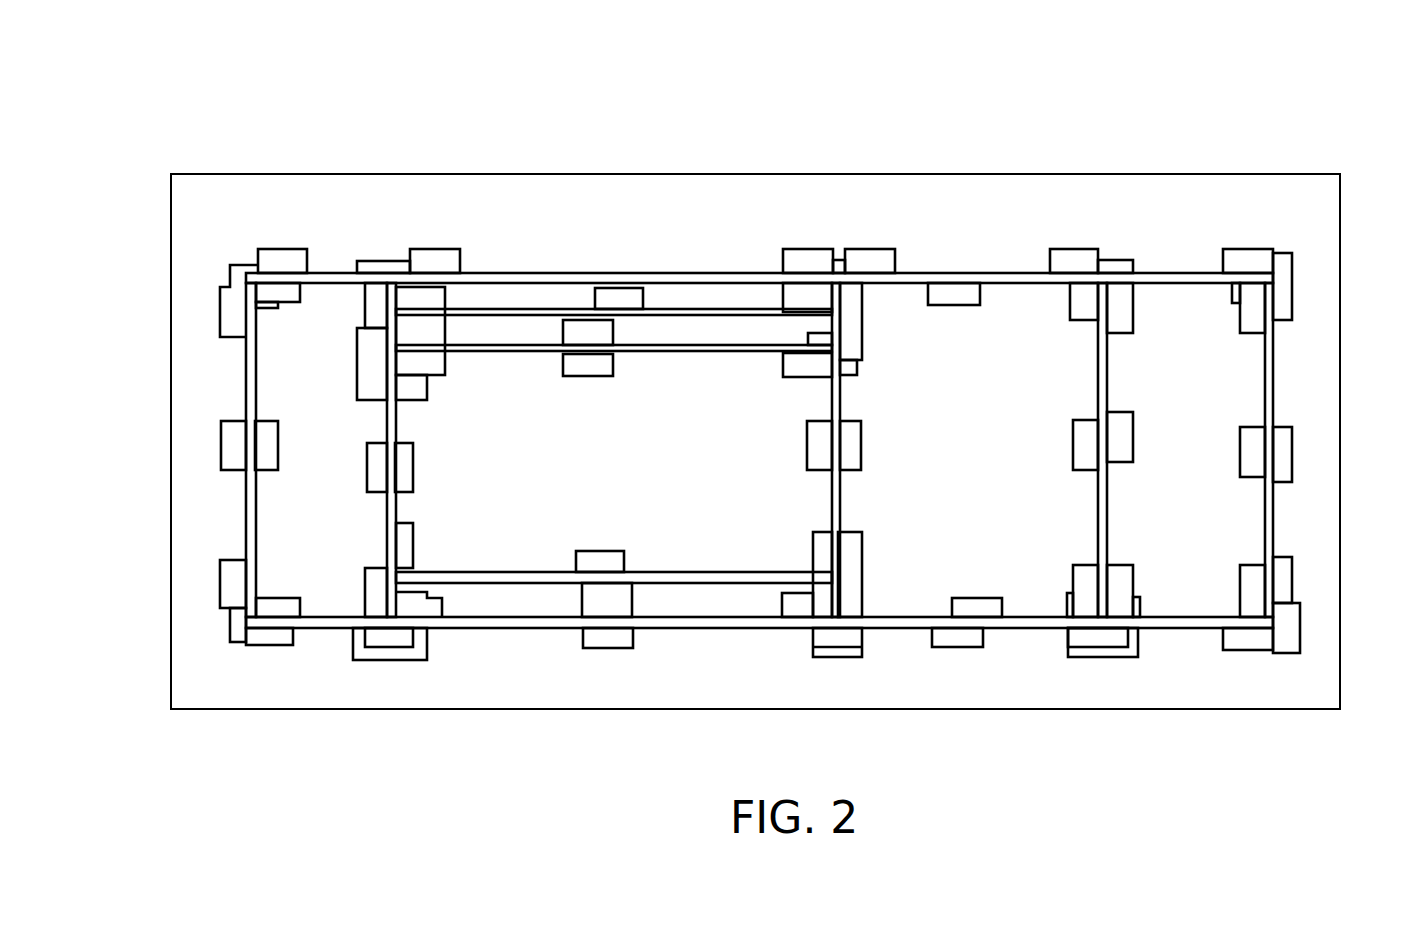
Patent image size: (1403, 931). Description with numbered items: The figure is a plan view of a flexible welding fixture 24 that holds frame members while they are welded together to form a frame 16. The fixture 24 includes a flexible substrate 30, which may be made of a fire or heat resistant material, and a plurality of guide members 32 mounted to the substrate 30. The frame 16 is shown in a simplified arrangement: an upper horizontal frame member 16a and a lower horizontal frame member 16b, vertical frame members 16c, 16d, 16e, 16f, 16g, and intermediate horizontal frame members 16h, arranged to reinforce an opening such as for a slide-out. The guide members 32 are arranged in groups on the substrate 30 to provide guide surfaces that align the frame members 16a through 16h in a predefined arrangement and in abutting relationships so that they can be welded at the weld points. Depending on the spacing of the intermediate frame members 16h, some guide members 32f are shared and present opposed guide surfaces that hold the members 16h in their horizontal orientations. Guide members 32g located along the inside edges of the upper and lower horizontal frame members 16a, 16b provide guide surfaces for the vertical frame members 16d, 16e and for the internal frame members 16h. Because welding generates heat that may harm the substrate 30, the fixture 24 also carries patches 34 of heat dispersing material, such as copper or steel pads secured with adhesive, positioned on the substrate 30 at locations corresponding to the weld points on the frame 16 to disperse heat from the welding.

The flexible welding fixture 24 is at (1263, 75).
The flexible substrate 30 is at (1160, 192).
The frame 16 is at (717, 270).
The upper horizontal frame member 16a is at (524, 272).
The lower horizontal frame member 16b is at (473, 640).
The vertical frame member 16c is at (246, 511).
The vertical frame member 16d is at (397, 516).
The vertical frame member 16e is at (831, 507).
The vertical frame member 16f is at (1097, 505).
The vertical frame member 16g is at (1273, 500).
The intermediate horizontal frame member 16h is at (697, 352).
The guide member 32 is at (222, 302).
The guide member 32f is at (614, 332).
The guide member 32g is at (373, 325).
The patch 34 is at (273, 310).